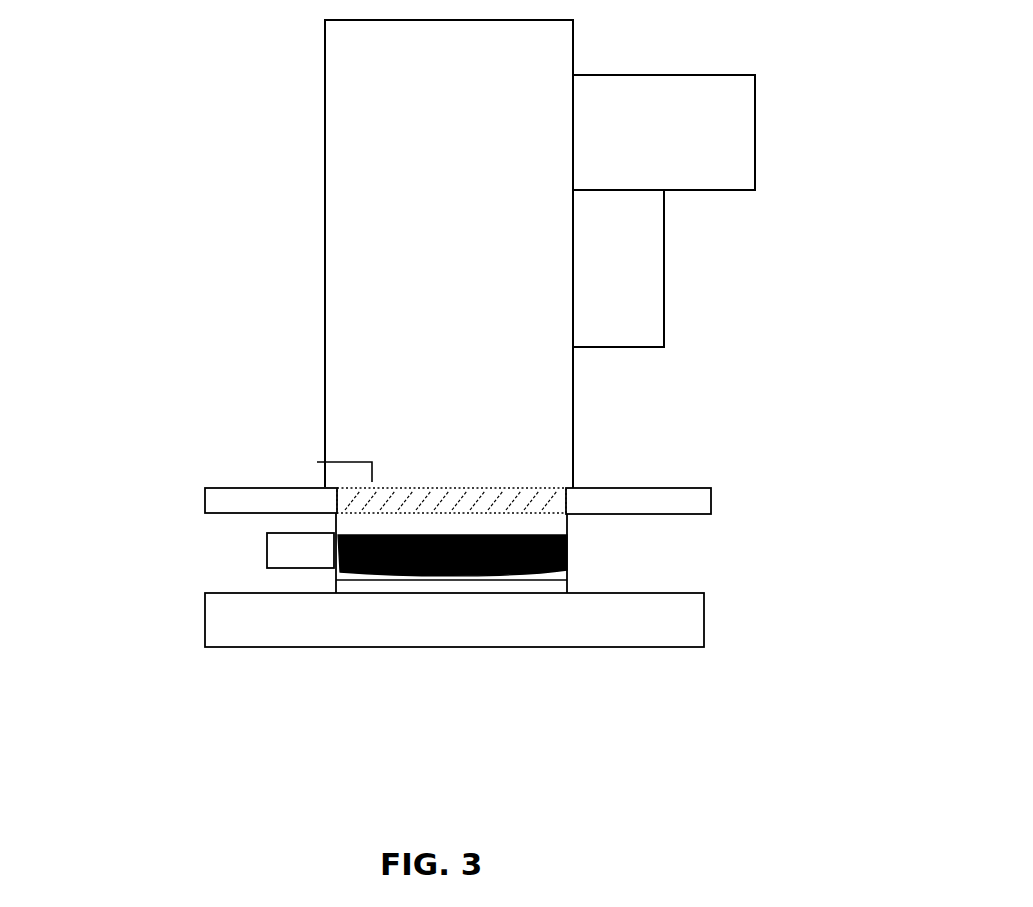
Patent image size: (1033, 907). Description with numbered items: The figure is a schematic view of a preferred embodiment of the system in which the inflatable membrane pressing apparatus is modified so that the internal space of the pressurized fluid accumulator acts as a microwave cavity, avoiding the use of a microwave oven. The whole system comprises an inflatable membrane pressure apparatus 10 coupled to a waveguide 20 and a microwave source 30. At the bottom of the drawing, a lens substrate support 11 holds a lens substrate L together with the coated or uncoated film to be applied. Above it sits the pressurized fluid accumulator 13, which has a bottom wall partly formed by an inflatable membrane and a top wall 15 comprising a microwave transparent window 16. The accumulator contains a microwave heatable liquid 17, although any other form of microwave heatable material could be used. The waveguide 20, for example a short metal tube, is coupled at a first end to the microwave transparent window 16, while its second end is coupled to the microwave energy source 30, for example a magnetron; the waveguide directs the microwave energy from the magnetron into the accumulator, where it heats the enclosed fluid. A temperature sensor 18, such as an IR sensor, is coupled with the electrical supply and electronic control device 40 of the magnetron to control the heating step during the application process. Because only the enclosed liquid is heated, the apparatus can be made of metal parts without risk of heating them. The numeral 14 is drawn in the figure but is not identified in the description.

The inflatable membrane pressure apparatus 10 is at (740, 514).
The lens substrate support 11 is at (242, 632).
The pressurized fluid accumulator 13 is at (194, 501).
The liquid 14 is at (367, 573).
The top wall 15 is at (705, 494).
The microwave transparent window 16 is at (520, 497).
The microwave heatable liquid 17 is at (568, 553).
The temperature sensor 18 is at (267, 563).
The waveguide 20 is at (333, 283).
The microwave source 30 is at (743, 150).
The electrical supply and electronic control device 40 is at (663, 260).
The lens substrate L is at (568, 575).